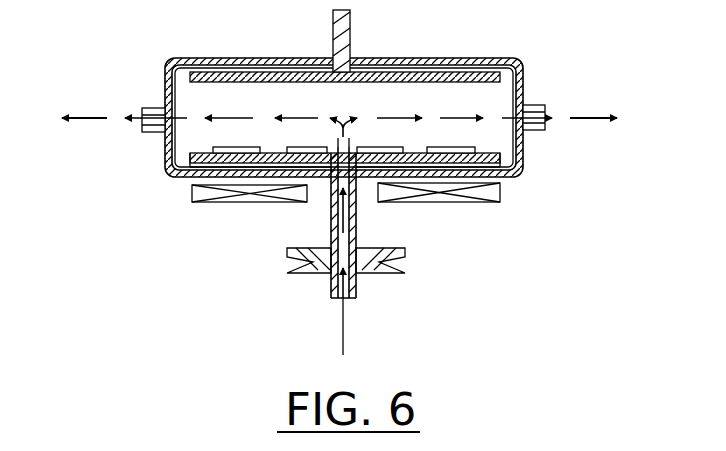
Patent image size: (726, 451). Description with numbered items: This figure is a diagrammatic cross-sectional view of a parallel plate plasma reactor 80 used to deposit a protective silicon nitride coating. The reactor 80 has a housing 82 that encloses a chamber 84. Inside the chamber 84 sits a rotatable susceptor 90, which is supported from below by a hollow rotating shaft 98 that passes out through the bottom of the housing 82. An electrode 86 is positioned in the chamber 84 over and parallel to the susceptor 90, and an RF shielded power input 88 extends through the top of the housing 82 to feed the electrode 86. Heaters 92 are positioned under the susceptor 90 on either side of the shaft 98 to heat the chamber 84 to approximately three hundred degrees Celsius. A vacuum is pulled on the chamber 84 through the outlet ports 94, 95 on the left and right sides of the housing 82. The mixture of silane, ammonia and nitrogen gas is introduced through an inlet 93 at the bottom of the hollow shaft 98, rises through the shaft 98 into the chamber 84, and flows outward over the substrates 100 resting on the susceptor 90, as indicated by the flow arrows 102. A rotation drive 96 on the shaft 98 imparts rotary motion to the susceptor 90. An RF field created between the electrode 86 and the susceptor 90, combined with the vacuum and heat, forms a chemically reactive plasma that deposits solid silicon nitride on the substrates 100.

The parallel plate plasma reactor 80 is at (422, 43).
The housing 82 is at (520, 70).
The chamber 84 is at (195, 60).
The electrode 86 is at (307, 67).
The RF shielded power input 88 is at (330, 22).
The rotatable susceptor 90 is at (196, 150).
The heaters 92 is at (220, 205).
The inlet 93 is at (353, 298).
The outlet port 94 is at (153, 107).
The outlet port 95 is at (540, 105).
The rotation drive 96 is at (310, 250).
The hollow rotating shaft 98 is at (356, 227).
The substrates 100 is at (460, 147).
The flow arrows 102 is at (460, 115).